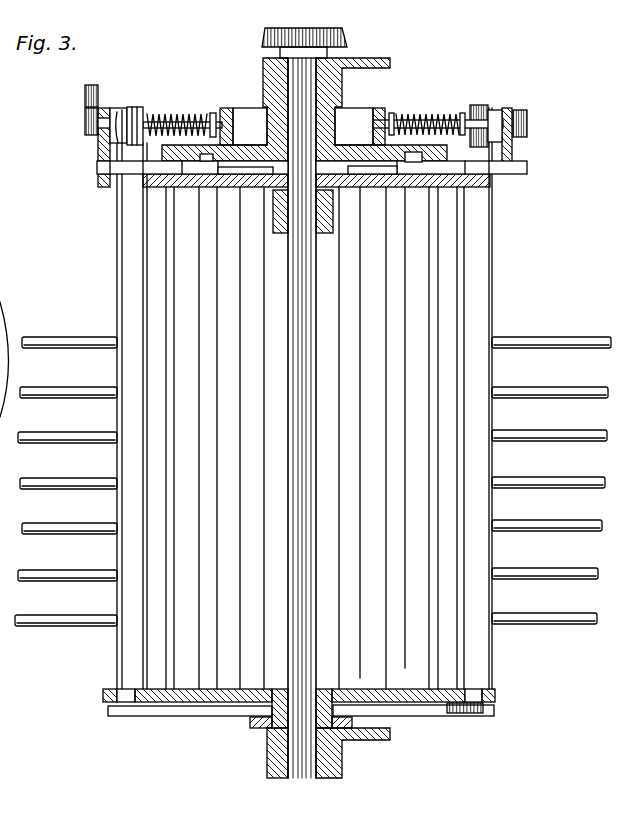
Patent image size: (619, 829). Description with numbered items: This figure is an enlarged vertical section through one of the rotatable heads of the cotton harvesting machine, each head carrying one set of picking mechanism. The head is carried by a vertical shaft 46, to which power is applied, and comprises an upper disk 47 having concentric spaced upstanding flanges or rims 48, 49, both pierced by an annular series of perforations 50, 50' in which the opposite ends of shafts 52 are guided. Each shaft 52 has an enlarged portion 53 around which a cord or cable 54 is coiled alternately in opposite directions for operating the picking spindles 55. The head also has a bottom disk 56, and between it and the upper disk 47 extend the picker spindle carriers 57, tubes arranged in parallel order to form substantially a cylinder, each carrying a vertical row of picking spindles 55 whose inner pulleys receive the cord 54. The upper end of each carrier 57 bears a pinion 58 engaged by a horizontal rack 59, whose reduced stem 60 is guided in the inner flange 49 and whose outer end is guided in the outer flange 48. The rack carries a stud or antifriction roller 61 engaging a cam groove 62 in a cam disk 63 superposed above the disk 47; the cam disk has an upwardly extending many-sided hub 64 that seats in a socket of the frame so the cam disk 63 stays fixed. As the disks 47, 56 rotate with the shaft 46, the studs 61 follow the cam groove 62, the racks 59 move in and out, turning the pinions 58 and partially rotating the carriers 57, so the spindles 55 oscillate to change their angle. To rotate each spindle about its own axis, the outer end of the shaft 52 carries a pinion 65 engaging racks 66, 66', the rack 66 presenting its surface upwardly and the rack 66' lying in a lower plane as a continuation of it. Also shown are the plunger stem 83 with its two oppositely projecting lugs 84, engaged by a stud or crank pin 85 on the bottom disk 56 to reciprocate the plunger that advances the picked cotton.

The vertical shaft 46 is at (290, 423).
The disk 47 is at (182, 188).
The outer upstanding flange 48 is at (98, 152).
The inner upstanding flange 49 is at (231, 110).
The perforations 50 is at (286, 112).
The perforations 50' is at (303, 127).
The shaft 52 is at (180, 118).
The enlarged portion 53 is at (121, 109).
The cord or cable 54 is at (141, 112).
The picking spindles 55 is at (90, 357).
The bottom disk 56 is at (208, 703).
The picker spindle carriers 57 is at (180, 651).
The pinion 58 is at (128, 166).
The horizontal rack 59 is at (97, 168).
The reduced stem 60 is at (246, 174).
The stud or antifriction roller 61 is at (207, 161).
The cam groove 62 is at (410, 152).
The cam disk 63 is at (396, 122).
The hub 64 is at (278, 78).
The pinion 65 is at (88, 118).
The rack 66 is at (75, 88).
The rack 66' is at (21, 342).
The plunger stem 83 is at (252, 728).
The lugs 84 is at (148, 716).
The stud or crank pin 85 is at (470, 714).